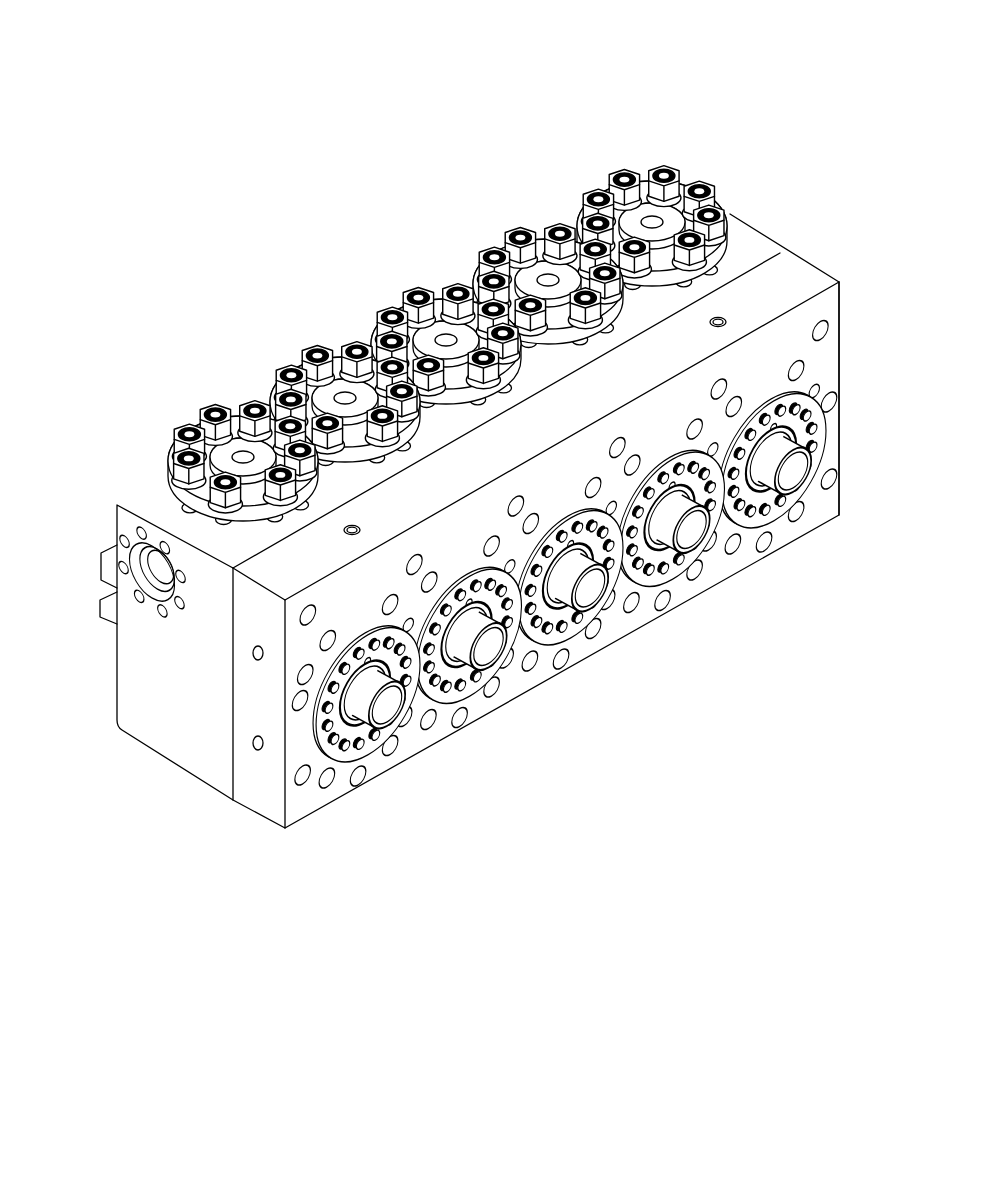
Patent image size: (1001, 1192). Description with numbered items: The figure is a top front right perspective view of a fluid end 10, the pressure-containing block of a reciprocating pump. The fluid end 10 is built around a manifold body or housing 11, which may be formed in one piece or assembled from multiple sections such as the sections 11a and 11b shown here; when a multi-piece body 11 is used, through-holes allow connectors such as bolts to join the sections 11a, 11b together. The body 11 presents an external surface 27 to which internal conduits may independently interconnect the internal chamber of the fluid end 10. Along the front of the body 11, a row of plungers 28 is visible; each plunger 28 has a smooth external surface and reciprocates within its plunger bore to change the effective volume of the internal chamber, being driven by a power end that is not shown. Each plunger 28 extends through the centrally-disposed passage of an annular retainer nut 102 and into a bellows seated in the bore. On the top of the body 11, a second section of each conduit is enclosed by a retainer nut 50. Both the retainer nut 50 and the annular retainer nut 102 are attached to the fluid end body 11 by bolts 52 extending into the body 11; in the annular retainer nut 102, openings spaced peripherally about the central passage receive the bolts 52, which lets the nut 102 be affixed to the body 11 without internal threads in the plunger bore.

The fluid end 10 is at (180, 90).
The manifold body 11 is at (753, 253).
The first section 11a is at (736, 205).
The second section 11b is at (797, 280).
The external surface 27 is at (828, 353).
The plunger 28 is at (390, 714).
The retainer nut 50 is at (202, 500).
The bolts 52 is at (212, 408).
The annular retainer nut 102 is at (352, 740).